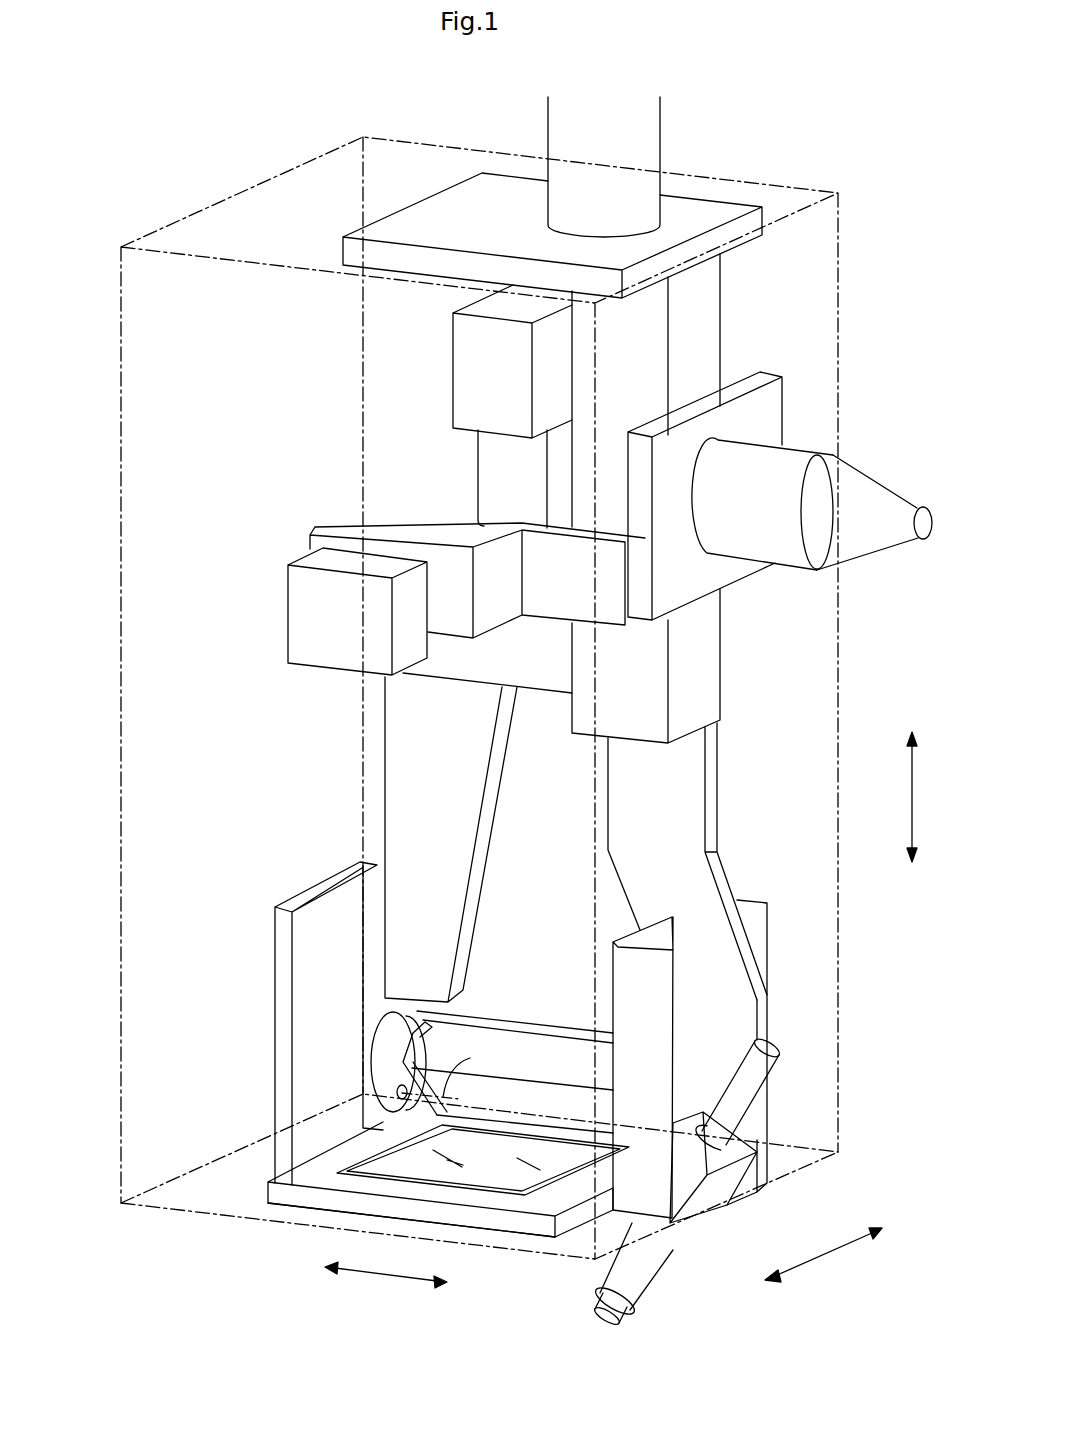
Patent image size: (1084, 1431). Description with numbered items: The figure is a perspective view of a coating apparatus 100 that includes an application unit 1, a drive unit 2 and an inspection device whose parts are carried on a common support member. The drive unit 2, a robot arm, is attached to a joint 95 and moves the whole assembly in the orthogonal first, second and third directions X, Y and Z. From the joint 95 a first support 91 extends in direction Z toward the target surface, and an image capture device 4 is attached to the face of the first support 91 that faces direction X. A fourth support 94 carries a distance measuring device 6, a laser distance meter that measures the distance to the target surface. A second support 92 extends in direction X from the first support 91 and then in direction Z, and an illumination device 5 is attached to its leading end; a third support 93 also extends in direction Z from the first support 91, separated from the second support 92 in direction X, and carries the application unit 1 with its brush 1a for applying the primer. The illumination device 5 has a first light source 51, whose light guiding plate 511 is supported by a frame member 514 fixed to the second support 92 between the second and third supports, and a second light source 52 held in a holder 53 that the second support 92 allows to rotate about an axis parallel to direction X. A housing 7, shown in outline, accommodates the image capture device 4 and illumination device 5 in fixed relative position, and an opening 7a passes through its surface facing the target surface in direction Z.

The coating apparatus 100 is at (205, 99).
The housing 7 is at (837, 250).
The opening 7a is at (182, 1222).
The drive unit 2 is at (662, 148).
The joint 95 is at (497, 190).
The first support 91 is at (708, 332).
The image capture device 4 is at (488, 472).
The fourth support 94 is at (338, 523).
The distance measuring device 6 is at (305, 615).
The second support 92 is at (410, 797).
The third support 93 is at (687, 782).
The illumination device 5 is at (508, 968).
The first light source 51 is at (482, 1237).
The light guiding plate 511 is at (515, 1180).
The frame member 514 is at (308, 1199).
The second light source 52 is at (543, 1050).
The holder 53 is at (383, 1065).
The application unit 1 is at (683, 1252).
The brush 1a is at (613, 1318).